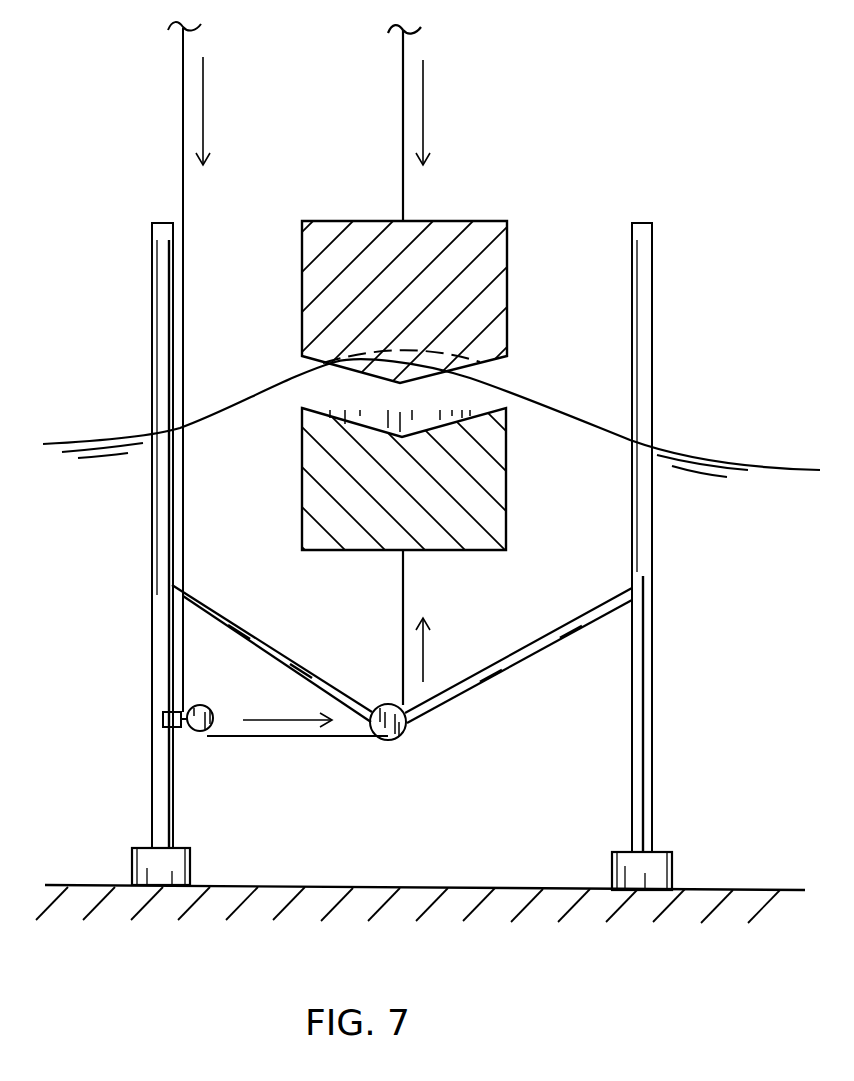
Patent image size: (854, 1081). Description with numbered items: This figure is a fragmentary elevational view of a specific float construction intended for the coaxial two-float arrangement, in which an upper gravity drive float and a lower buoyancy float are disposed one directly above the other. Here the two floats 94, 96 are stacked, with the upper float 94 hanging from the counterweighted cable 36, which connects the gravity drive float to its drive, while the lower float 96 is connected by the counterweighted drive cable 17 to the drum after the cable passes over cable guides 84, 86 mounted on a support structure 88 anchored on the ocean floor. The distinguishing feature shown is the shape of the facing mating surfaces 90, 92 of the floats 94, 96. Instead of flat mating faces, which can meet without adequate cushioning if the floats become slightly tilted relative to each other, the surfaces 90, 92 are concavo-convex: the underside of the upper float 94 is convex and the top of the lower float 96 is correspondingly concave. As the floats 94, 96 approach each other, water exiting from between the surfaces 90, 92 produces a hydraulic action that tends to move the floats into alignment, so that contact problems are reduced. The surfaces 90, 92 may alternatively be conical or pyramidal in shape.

The counterweighted drive cable 17 is at (186, 272).
The counterweighted cable 36 is at (403, 122).
The cable guide 84 is at (396, 741).
The cable guide 86 is at (187, 738).
The support structure 88 is at (662, 678).
The mating surface 90 is at (440, 372).
The mating surface 92 is at (345, 436).
The float 94 is at (472, 303).
The float 96 is at (467, 500).